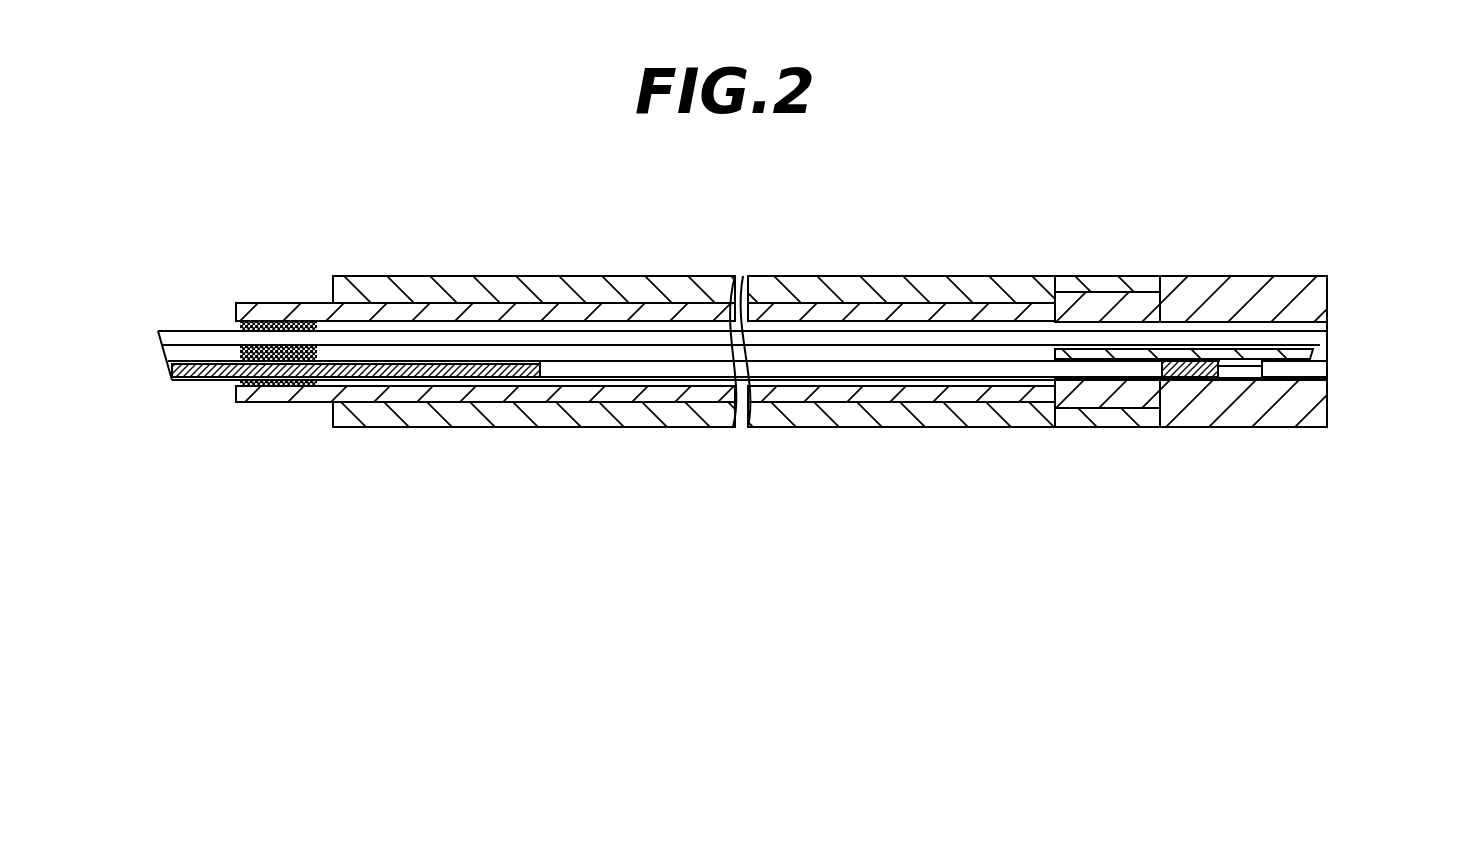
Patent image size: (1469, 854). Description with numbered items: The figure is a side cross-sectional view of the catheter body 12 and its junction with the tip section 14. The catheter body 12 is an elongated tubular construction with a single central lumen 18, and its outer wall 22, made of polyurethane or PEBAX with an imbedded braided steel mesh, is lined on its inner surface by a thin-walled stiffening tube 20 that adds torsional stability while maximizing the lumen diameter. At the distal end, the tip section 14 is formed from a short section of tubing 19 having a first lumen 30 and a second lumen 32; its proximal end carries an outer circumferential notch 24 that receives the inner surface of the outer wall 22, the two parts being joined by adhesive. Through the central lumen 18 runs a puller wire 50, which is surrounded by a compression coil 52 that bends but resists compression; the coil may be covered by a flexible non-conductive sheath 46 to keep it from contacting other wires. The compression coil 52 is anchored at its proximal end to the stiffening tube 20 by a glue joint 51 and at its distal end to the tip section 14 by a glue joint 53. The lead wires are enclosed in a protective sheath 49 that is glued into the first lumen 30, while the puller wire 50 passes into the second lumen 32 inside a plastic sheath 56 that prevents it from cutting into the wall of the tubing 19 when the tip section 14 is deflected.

The catheter body 12 is at (963, 246).
The tip section 14 is at (1375, 397).
The central lumen 18 is at (650, 352).
The tubing 19 is at (1205, 300).
The stiffening tube 20 is at (493, 313).
The outer wall 22 is at (838, 290).
The outer circumferential notch 24 is at (1107, 412).
The first lumen 30 is at (1310, 324).
The second lumen 32 is at (1302, 377).
The non-conductive sheath 46 is at (648, 370).
The protective sheath 49 is at (612, 336).
The puller wire 50 is at (1248, 357).
The glue joint 51 is at (284, 324).
The compression coil 52 is at (417, 366).
The glue joint 53 is at (1172, 378).
The sheath 56 is at (1318, 360).